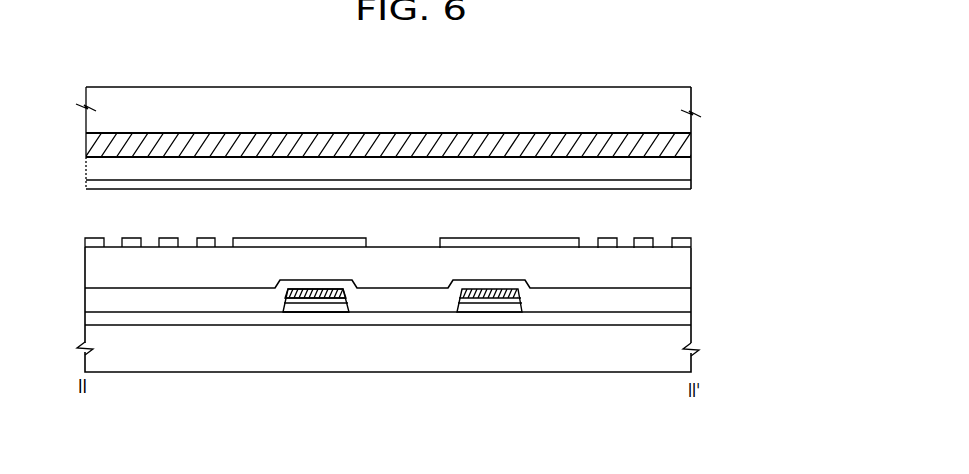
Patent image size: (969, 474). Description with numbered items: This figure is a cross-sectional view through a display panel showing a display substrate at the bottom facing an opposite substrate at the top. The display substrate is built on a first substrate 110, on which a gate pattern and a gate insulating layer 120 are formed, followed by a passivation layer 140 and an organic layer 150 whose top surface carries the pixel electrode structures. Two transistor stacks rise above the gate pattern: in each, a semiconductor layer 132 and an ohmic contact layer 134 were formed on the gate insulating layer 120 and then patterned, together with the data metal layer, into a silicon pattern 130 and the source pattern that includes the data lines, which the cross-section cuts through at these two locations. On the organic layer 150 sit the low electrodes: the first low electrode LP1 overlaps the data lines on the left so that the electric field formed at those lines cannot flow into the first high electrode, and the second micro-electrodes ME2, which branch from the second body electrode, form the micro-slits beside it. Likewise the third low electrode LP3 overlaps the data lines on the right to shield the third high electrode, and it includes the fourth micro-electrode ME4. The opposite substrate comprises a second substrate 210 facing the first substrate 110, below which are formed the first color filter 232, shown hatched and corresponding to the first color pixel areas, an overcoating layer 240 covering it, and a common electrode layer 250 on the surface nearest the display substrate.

The second substrate 210 is at (236, 97).
The first color filter 232 is at (298, 133).
The overcoating layer 240 is at (352, 163).
The common electrode layer 250 is at (404, 185).
The second micro-electrodes ME2 is at (128, 241).
The first low electrode LP1 is at (327, 243).
The third low electrode LP3 is at (485, 243).
The fourth micro-electrode ME4 is at (608, 243).
The first substrate 110 is at (555, 350).
The gate insulating layer 120 is at (593, 322).
The passivation layer 140 is at (630, 310).
The organic layer 150 is at (665, 297).
The silicon pattern 130 is at (392, 424).
The semiconductor layer 132 is at (317, 312).
The ohmic contact layer 134 is at (337, 312).